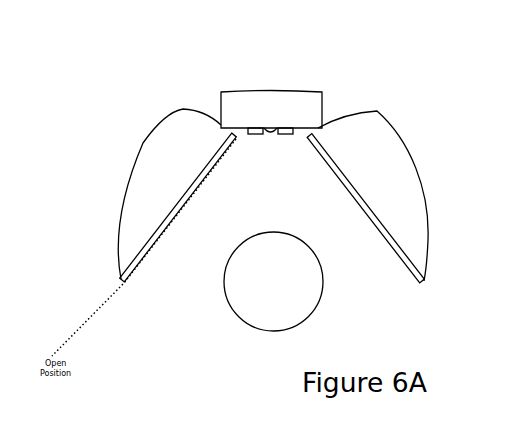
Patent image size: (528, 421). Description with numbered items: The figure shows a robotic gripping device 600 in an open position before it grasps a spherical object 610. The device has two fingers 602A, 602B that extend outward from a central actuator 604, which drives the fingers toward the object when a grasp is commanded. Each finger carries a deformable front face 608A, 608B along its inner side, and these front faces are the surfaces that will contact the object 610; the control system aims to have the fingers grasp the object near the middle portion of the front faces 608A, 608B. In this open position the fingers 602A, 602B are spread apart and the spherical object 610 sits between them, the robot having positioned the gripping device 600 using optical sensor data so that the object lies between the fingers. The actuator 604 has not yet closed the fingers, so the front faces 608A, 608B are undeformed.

The robotic gripping device 600 is at (185, 77).
The actuator 604 is at (277, 82).
The finger 602A is at (131, 149).
The finger 602B is at (414, 148).
The front face 608A is at (196, 191).
The front face 608B is at (340, 180).
The spherical object 610 is at (317, 303).